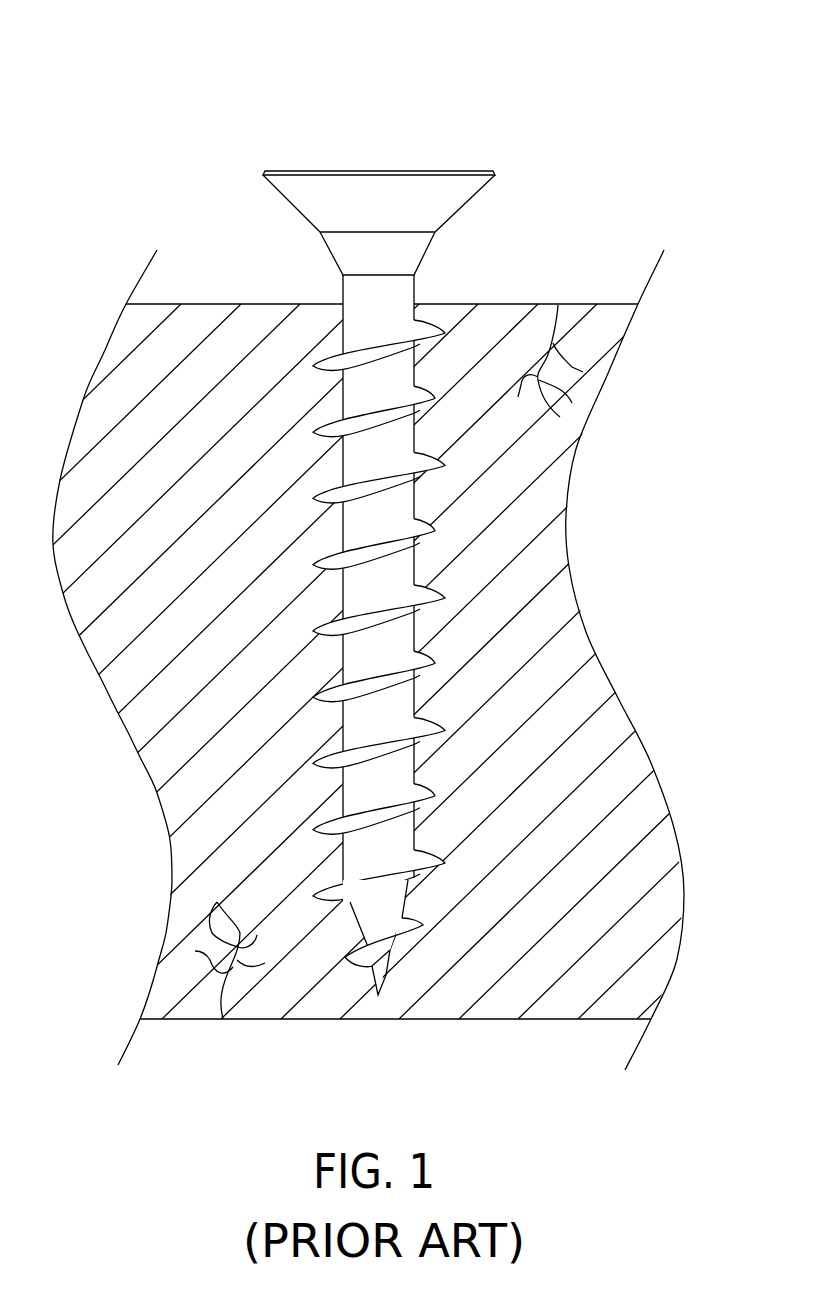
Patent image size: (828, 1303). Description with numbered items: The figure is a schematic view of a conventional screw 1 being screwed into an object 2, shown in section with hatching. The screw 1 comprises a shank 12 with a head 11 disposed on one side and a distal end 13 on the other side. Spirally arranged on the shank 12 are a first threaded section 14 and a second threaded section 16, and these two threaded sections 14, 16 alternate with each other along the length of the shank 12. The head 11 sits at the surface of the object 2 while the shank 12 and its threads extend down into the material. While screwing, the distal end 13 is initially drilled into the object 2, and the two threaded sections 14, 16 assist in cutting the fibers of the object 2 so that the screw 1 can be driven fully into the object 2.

The screw 1 is at (336, 541).
The object 2 is at (222, 305).
The head 11 is at (393, 196).
The shank 12 is at (387, 297).
The distal end 13 is at (380, 997).
The first threaded section 14 is at (300, 338).
The second threaded section 16 is at (460, 385).